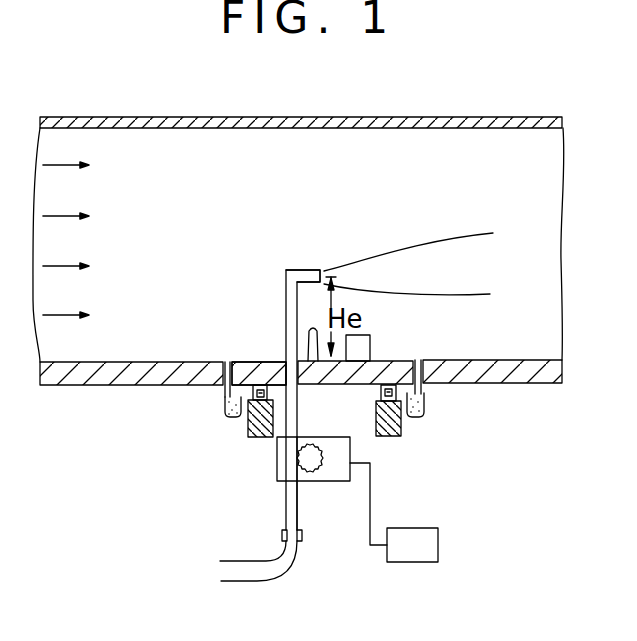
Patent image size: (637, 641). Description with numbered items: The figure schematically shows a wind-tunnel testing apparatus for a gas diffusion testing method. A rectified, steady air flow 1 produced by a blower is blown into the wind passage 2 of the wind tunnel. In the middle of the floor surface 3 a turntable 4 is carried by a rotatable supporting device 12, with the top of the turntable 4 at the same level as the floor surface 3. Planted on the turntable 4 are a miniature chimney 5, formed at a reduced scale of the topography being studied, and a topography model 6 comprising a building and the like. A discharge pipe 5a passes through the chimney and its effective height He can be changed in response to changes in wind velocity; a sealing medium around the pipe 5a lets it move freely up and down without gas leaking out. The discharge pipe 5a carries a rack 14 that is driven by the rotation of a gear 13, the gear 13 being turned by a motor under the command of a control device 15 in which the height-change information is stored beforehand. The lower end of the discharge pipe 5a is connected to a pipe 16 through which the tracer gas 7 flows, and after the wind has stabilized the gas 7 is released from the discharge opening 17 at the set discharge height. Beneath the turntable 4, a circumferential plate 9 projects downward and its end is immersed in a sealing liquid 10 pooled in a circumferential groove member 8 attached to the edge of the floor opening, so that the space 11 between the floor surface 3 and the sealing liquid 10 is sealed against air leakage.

The air flow 1 is at (105, 245).
The wind passage 2 is at (357, 117).
The floor surface 3 is at (155, 362).
The turntable 4 is at (241, 362).
The miniature chimney 5 is at (313, 326).
The discharge pipe 5a is at (285, 290).
The topography model 6 is at (365, 347).
The tracer gas 7 is at (386, 275).
The circumferential groove member 8 is at (233, 420).
The circumferential plate 9 is at (227, 407).
The sealing liquid 10 is at (417, 420).
The space 11 is at (226, 362).
The rotatable supporting device 12 is at (378, 391).
The gear 13 is at (313, 470).
The rack 14 is at (300, 482).
The control device 15 is at (410, 538).
The pipe 16 is at (280, 581).
The discharge opening 17 is at (305, 278).